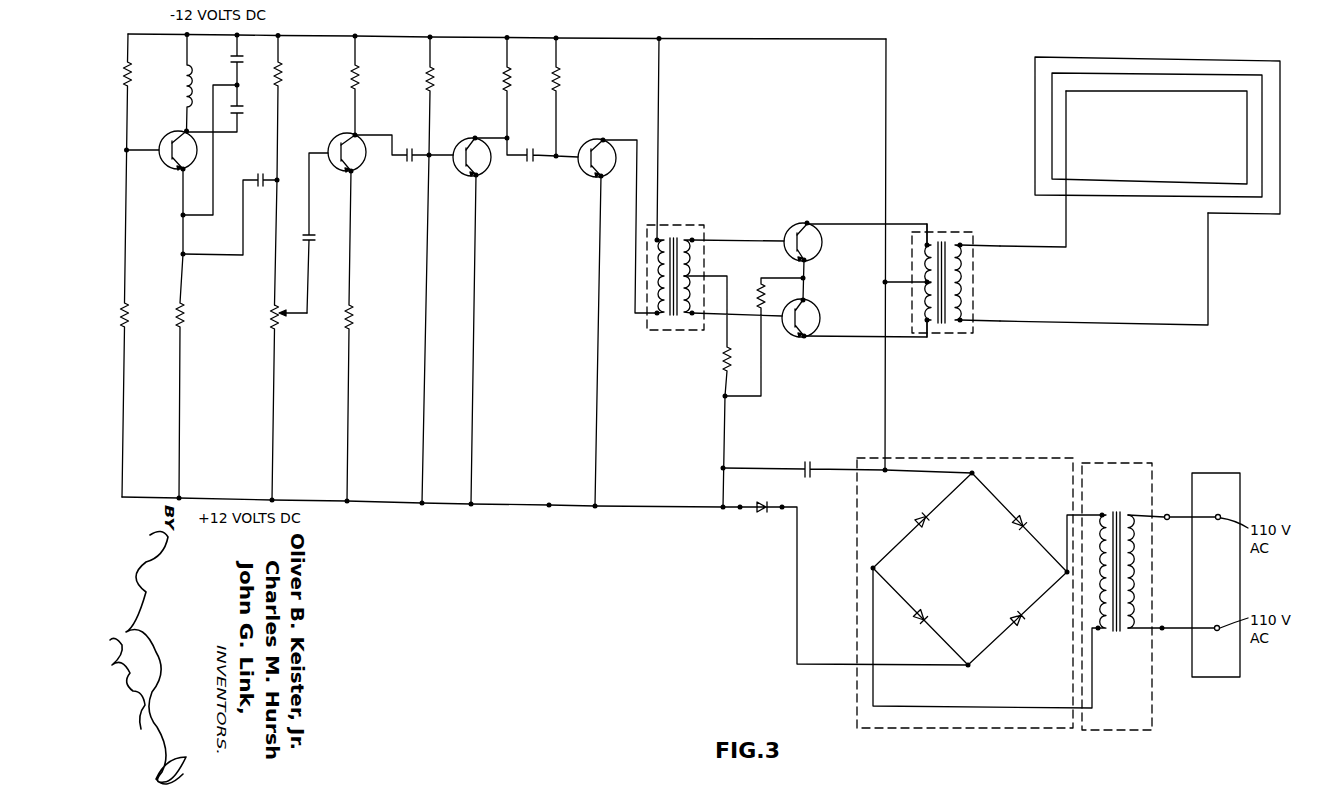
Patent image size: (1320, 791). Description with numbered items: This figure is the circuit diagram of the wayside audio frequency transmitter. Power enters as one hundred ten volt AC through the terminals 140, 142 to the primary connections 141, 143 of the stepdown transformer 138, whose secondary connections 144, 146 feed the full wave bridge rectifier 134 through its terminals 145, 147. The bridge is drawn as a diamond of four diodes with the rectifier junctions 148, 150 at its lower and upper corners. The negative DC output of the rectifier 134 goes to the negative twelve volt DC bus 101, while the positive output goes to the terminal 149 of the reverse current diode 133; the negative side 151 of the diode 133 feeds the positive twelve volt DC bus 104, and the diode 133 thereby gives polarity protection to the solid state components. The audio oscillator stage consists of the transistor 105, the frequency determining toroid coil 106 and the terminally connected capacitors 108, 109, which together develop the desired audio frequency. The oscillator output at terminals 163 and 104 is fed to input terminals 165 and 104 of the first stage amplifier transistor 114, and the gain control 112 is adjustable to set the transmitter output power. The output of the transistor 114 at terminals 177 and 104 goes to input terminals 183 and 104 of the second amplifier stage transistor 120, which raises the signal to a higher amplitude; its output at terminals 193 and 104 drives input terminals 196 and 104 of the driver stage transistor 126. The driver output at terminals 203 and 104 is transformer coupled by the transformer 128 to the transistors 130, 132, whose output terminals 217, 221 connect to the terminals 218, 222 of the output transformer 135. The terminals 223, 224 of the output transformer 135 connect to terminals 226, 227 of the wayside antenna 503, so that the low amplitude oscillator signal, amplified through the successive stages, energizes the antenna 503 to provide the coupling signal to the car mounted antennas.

The negative 12 volt DC bus 101 is at (445, 38).
The positive 12 volt DC bus 104 is at (334, 503).
The transistor 105 is at (172, 166).
The frequency determining toroid coil 106 is at (184, 79).
The capacitor 108 is at (240, 60).
The capacitor 109 is at (242, 114).
The gain control 112 is at (272, 318).
The first stage amplifier transistor 114 is at (338, 138).
The second amplifier stage transistor 120 is at (469, 139).
The driver stage transistor 126 is at (596, 139).
The transformer 128 is at (676, 233).
The transistor 130 is at (797, 229).
The transistor 132 is at (813, 319).
The reverse current diode 133 is at (762, 501).
The full wave bridge rectifier 134 is at (989, 483).
The output transformer 135 is at (945, 242).
The stepdown transformer 138 is at (1115, 510).
The terminal 140 is at (1221, 516).
The primary connection 141 is at (1167, 514).
The terminal 142 is at (1220, 630).
The primary connection 143 is at (1162, 631).
The secondary connection 144 is at (1100, 512).
The terminal 145 is at (1064, 573).
The secondary connection 146 is at (1098, 631).
The terminal 147 is at (878, 569).
The bridge negative terminal 148 is at (967, 670).
The terminal 149 is at (785, 505).
The bridge positive terminal 150 is at (970, 478).
The negative side 151 is at (740, 511).
The output terminal 163 is at (184, 134).
The input terminal 165 is at (319, 164).
The output terminal 177 is at (358, 134).
The input terminal 183 is at (449, 160).
The output terminal 193 is at (508, 138).
The input terminal 196 is at (574, 163).
The output terminal 203 is at (605, 138).
The output terminal 217 is at (834, 226).
The terminal 218 is at (900, 224).
The output terminal 221 is at (851, 346).
The terminal 222 is at (908, 342).
The terminal 223 is at (963, 247).
The terminal 224 is at (989, 324).
The terminal 226 is at (1069, 227).
The terminal 227 is at (1210, 262).
The wayside antenna 503 is at (1169, 147).